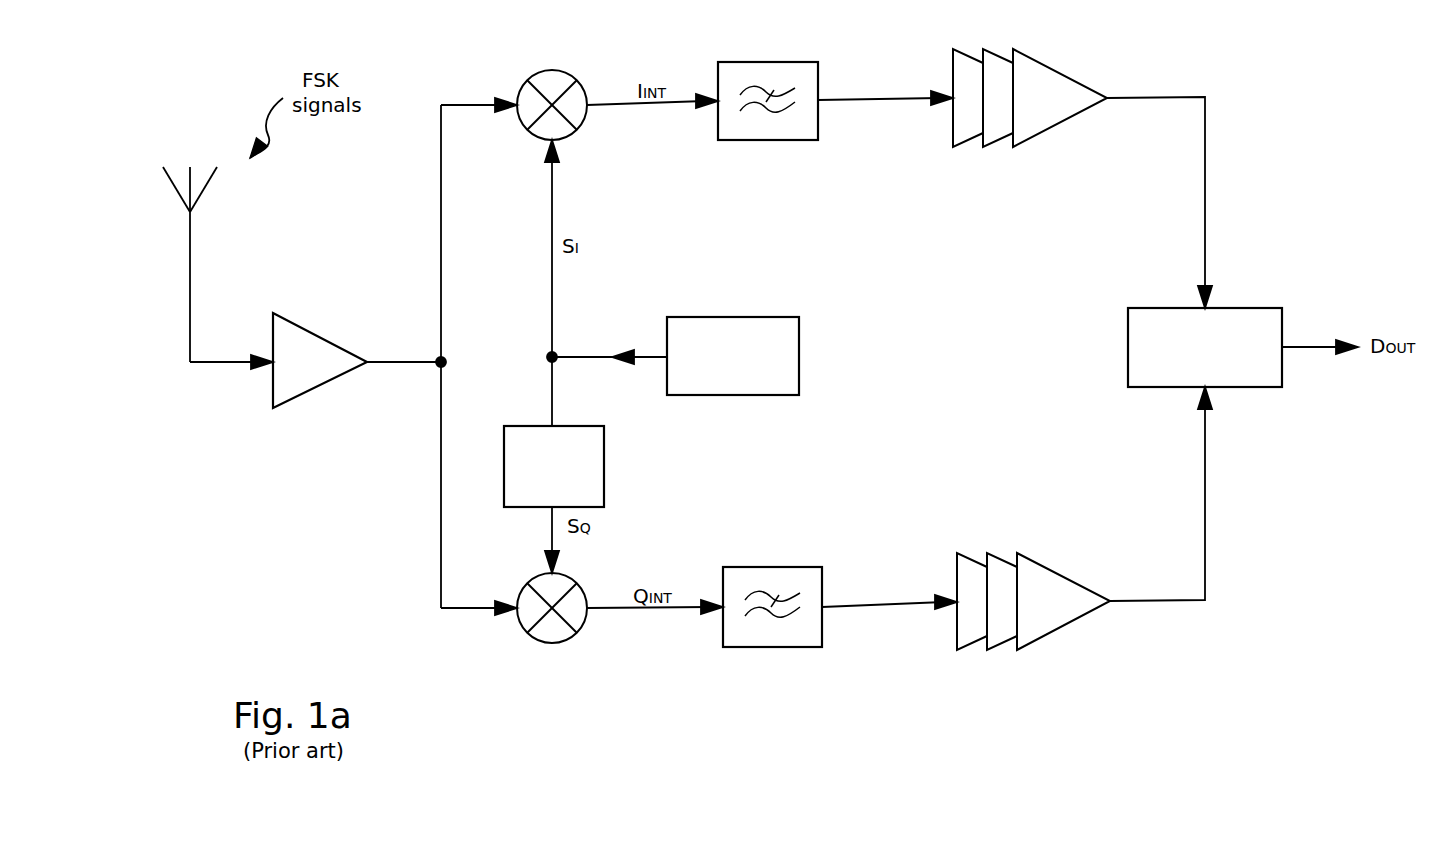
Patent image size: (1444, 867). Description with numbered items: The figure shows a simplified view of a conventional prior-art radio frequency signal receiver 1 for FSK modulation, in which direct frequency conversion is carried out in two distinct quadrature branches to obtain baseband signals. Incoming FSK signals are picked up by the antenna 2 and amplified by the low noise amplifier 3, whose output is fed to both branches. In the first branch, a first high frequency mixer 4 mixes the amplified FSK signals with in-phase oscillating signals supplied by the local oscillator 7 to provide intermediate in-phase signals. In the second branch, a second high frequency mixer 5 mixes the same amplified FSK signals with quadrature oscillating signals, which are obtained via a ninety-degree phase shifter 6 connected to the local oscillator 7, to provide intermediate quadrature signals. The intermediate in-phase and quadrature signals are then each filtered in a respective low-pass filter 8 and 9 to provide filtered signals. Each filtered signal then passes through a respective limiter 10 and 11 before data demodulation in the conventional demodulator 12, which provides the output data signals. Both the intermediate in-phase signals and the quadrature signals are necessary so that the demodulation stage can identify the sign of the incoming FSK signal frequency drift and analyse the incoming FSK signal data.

The radio frequency signal receiver 1 is at (1270, 82).
The antenna 2 is at (190, 266).
The low noise amplifier 3 is at (313, 343).
The first high frequency mixer 4 is at (553, 78).
The second high frequency mixer 5 is at (558, 637).
The 90° phase shifter 6 is at (595, 467).
The local oscillator 7 is at (731, 325).
The low-pass filter 8 is at (768, 72).
The low-pass filter 9 is at (773, 635).
The limiter 10 is at (1045, 85).
The limiter 11 is at (1048, 612).
The demodulator 12 is at (1153, 320).